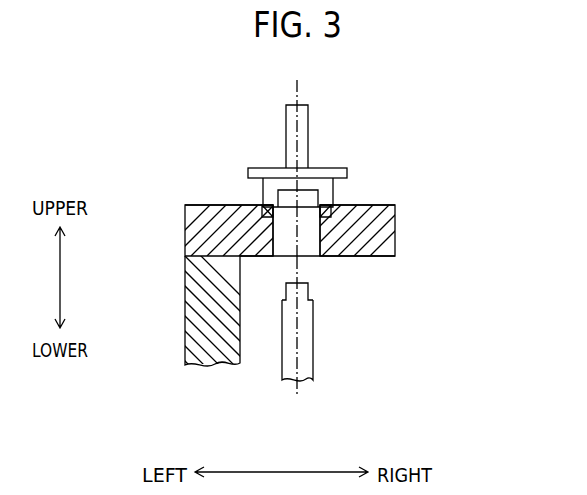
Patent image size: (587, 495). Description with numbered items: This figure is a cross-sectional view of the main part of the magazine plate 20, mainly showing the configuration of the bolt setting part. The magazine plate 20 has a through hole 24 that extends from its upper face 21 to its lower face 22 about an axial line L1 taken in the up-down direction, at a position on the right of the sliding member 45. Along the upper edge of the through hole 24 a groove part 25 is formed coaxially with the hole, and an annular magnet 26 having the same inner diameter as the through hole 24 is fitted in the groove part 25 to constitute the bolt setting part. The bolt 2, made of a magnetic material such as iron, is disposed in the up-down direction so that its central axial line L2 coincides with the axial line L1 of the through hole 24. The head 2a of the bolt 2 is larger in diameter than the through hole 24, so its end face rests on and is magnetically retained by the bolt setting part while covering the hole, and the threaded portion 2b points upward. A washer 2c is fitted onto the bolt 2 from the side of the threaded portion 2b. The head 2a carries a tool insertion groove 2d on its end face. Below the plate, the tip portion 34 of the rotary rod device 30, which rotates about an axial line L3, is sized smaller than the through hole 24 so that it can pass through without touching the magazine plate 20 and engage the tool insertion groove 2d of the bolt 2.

The bolt 2 is at (290, 138).
The head 2a is at (262, 185).
The threaded portion 2b is at (308, 112).
The washer 2c is at (258, 168).
The tool insertion groove 2d is at (320, 178).
The magazine plate 20 is at (305, 248).
The upper face 21 is at (383, 205).
The lower face 22 is at (385, 257).
The through hole 24 is at (273, 235).
The groove part 25 is at (264, 207).
The annular magnet 26 is at (331, 208).
The rotary rod device 30 is at (346, 332).
The tip portion 34 is at (308, 293).
The sliding member 45 is at (185, 303).
The axial line L1 is at (300, 250).
The axial line L2 is at (302, 140).
The axial line L3 is at (300, 392).